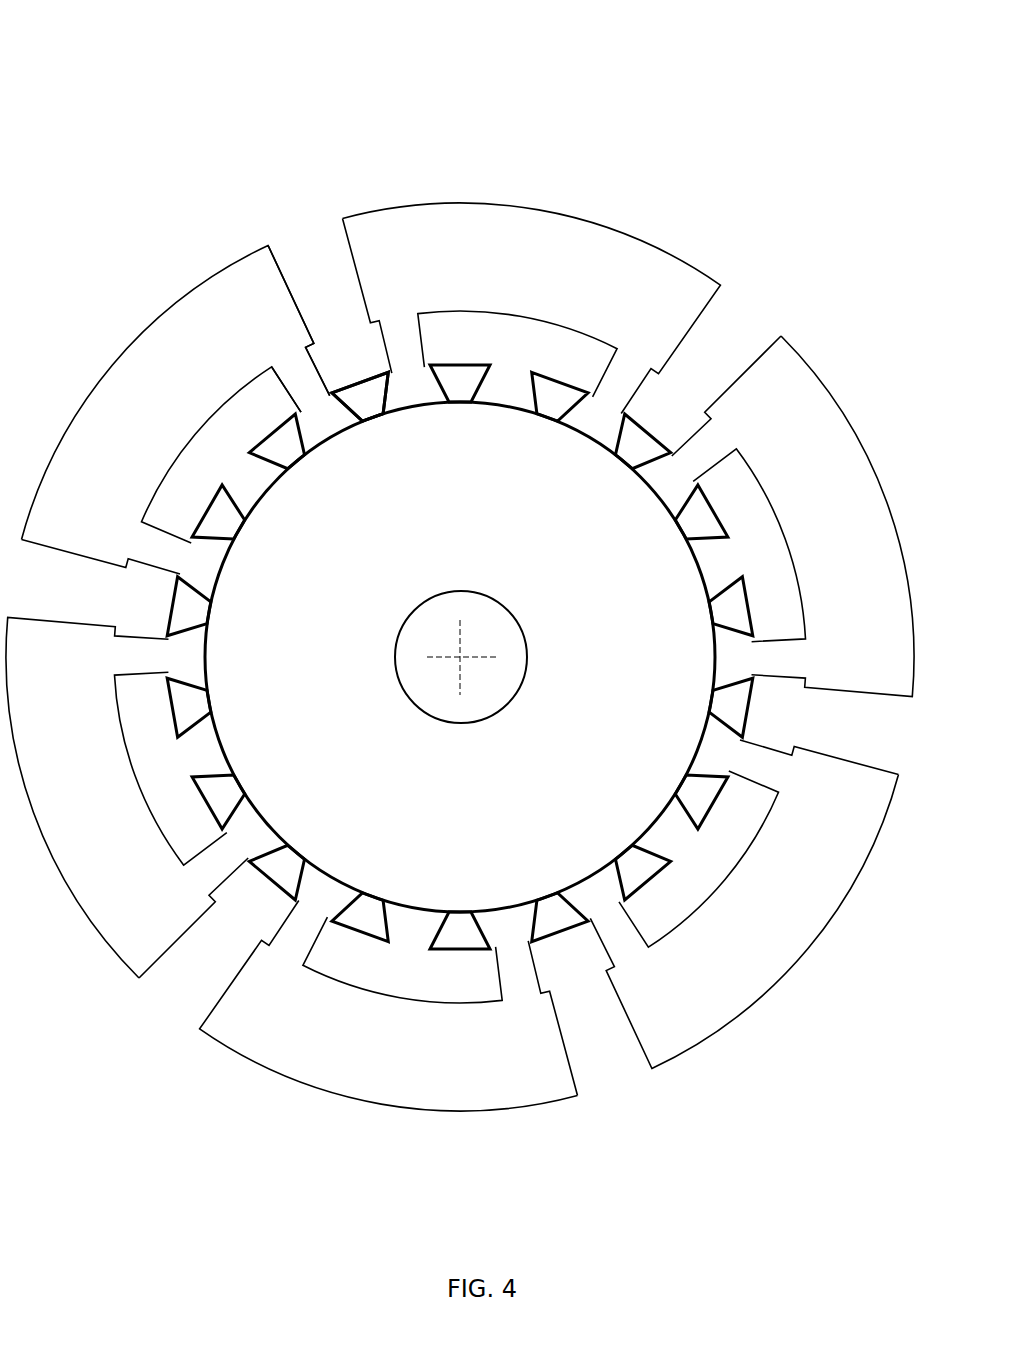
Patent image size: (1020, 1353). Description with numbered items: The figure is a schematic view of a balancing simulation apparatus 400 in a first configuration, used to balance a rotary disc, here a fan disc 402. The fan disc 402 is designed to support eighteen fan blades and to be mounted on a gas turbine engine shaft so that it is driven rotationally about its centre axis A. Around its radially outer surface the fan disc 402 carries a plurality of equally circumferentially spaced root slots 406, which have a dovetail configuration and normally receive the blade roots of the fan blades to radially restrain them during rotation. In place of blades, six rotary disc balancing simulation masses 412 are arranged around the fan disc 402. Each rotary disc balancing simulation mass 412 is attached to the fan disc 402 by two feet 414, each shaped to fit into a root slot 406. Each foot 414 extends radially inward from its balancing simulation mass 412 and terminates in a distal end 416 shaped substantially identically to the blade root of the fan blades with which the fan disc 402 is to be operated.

The balancing simulation apparatus 400 is at (728, 197).
The fan disc 402 is at (497, 847).
The root slots 406 is at (530, 387).
The rotary disc balancing simulation mass 412 is at (163, 410).
The foot 414 is at (302, 382).
The distal end 416 is at (330, 415).